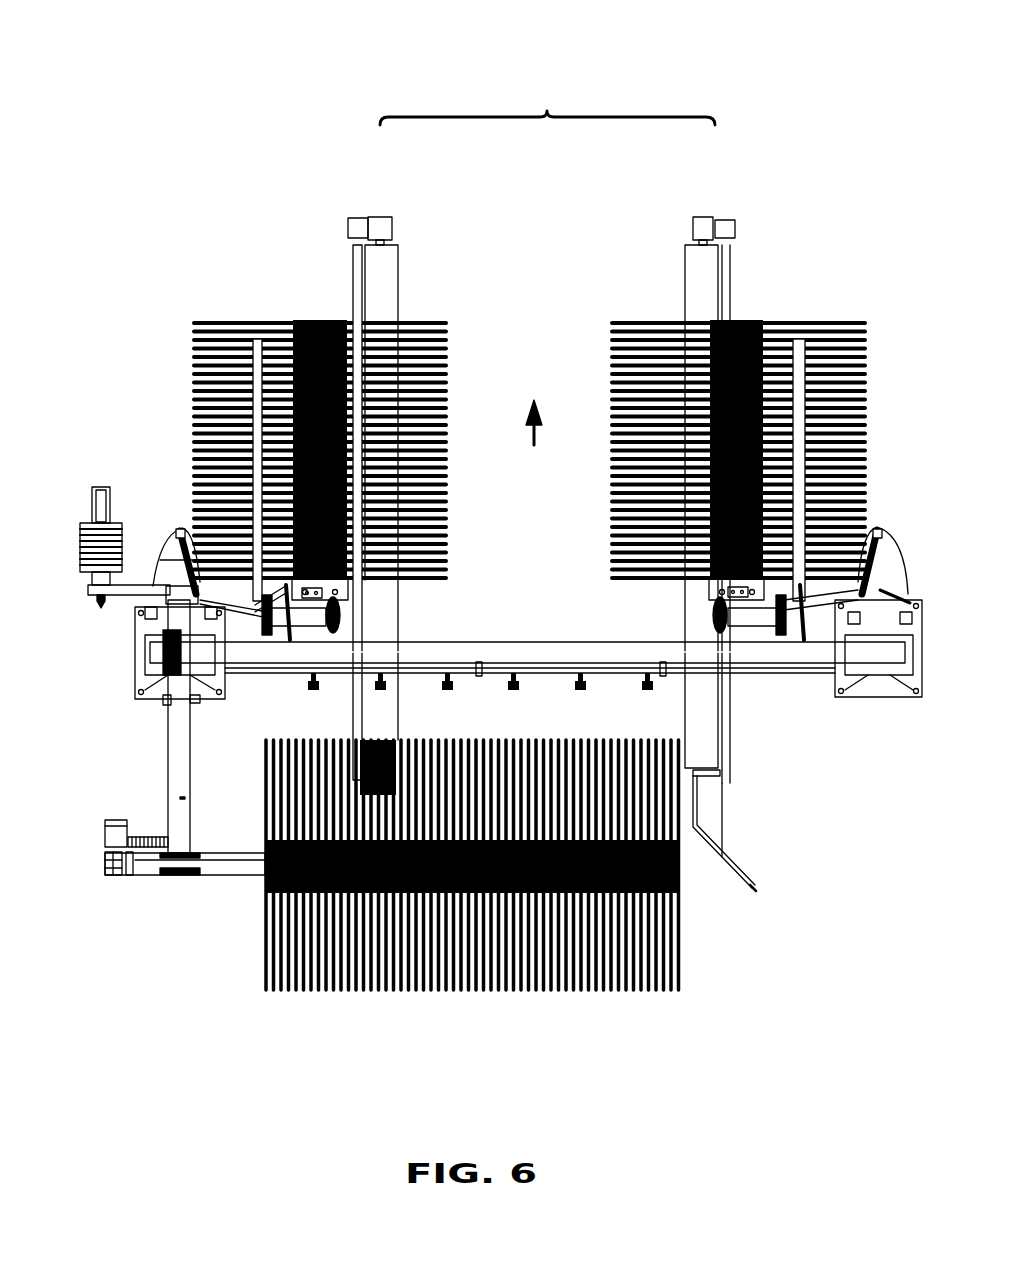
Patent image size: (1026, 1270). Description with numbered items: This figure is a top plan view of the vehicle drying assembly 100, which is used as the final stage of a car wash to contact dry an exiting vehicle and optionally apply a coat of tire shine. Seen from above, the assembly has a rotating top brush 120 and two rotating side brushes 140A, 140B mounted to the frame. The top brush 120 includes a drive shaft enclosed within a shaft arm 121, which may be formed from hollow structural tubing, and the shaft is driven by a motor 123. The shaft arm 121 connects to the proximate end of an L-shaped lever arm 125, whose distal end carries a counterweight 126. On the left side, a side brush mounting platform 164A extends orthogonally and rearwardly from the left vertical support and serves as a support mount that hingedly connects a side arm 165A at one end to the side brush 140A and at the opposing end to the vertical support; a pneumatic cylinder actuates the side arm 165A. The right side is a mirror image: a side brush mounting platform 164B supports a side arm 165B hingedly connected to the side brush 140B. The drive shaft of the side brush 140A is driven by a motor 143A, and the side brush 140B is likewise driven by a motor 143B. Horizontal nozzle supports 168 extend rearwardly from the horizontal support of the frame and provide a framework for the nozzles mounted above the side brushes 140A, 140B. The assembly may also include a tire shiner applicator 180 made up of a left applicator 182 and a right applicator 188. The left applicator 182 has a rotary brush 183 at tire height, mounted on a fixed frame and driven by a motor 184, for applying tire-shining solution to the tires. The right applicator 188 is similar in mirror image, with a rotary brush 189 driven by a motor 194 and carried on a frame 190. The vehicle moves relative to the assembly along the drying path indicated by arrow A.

The vehicle drying assembly 100 is at (95, 60).
The top brush 120 is at (680, 966).
The shaft arm 121 is at (230, 878).
The motor 123 is at (105, 836).
The lever arm 125 is at (168, 753).
The counterweight 126 is at (80, 540).
The side brush 140A is at (290, 320).
The side brush 140B is at (780, 320).
The motor 143A is at (320, 628).
The motor 143B is at (738, 627).
The side brush mounting platform 164A is at (168, 557).
The side brush mounting platform 164B is at (893, 556).
The side arm 165A is at (217, 622).
The side arm 165B is at (838, 623).
The horizontal nozzle supports 168 is at (258, 383).
The tire shiner applicator 180 is at (547, 101).
The left applicator 182 is at (353, 280).
The rotary brush 183 is at (399, 715).
The motor 184 is at (378, 215).
The right applicator 188 is at (753, 889).
The rotary brush 189 is at (685, 715).
The frame 190 is at (712, 818).
The motor 194 is at (712, 215).